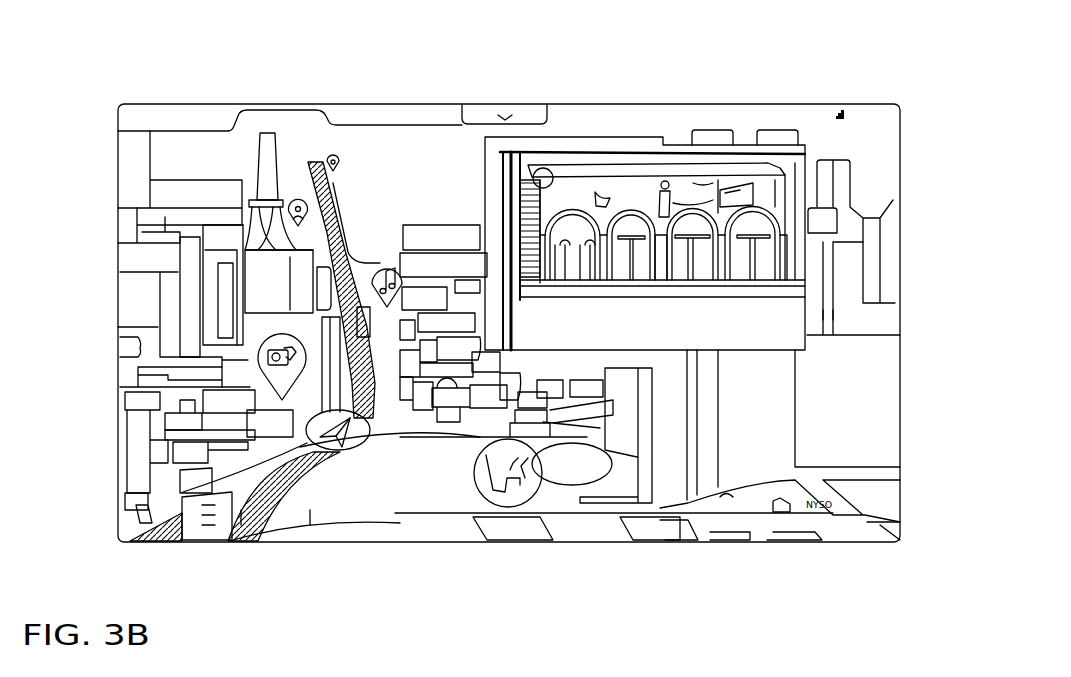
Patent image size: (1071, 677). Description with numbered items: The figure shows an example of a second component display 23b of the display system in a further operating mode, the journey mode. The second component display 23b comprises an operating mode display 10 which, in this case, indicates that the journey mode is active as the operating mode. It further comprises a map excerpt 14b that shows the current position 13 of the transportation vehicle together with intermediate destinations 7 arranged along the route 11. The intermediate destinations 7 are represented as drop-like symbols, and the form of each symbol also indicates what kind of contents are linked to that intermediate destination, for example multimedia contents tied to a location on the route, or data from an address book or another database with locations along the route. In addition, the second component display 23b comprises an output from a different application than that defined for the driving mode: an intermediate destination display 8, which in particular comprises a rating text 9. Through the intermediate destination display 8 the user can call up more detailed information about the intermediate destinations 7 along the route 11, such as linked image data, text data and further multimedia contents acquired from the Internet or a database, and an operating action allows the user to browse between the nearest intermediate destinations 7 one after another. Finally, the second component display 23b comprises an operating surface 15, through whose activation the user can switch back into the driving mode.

The second component display 23b is at (120, 106).
The operating mode display 10 is at (287, 104).
The route 11 is at (343, 232).
The intermediate destinations 7 is at (395, 252).
The intermediate destination display 8 is at (578, 147).
The map excerpt 14b is at (195, 325).
The current position 13 is at (367, 463).
The operating surface 15 is at (523, 490).
The rating text 9 is at (668, 340).